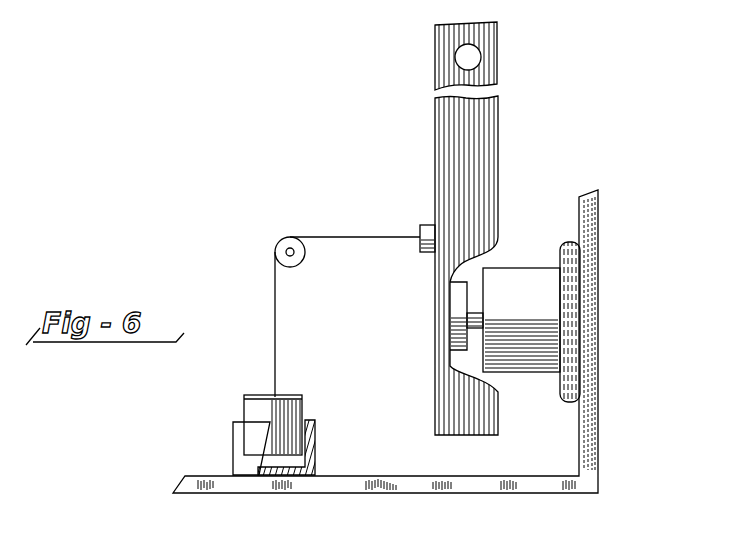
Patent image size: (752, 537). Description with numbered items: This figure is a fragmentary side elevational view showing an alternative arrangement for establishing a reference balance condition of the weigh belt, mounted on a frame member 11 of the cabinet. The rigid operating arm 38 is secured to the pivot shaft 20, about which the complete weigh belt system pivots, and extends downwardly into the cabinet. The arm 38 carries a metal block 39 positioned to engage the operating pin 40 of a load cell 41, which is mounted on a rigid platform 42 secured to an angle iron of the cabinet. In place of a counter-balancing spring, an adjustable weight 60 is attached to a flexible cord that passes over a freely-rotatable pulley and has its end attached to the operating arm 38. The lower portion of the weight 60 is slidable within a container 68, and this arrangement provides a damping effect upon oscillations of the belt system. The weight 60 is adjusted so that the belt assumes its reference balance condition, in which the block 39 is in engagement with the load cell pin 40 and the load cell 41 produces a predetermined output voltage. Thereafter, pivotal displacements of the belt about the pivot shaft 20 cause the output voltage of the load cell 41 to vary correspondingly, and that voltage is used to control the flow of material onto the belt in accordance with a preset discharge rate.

The base frame wall 11 is at (598, 278).
The pivot shaft 20 is at (479, 51).
The operating arm 38 is at (498, 113).
The metal block 39 is at (455, 298).
The operating pin 40 is at (476, 315).
The load cell 41 is at (533, 268).
The rigid platform 42 is at (571, 242).
The adjustable weight 60 is at (301, 411).
The container 68 is at (233, 438).